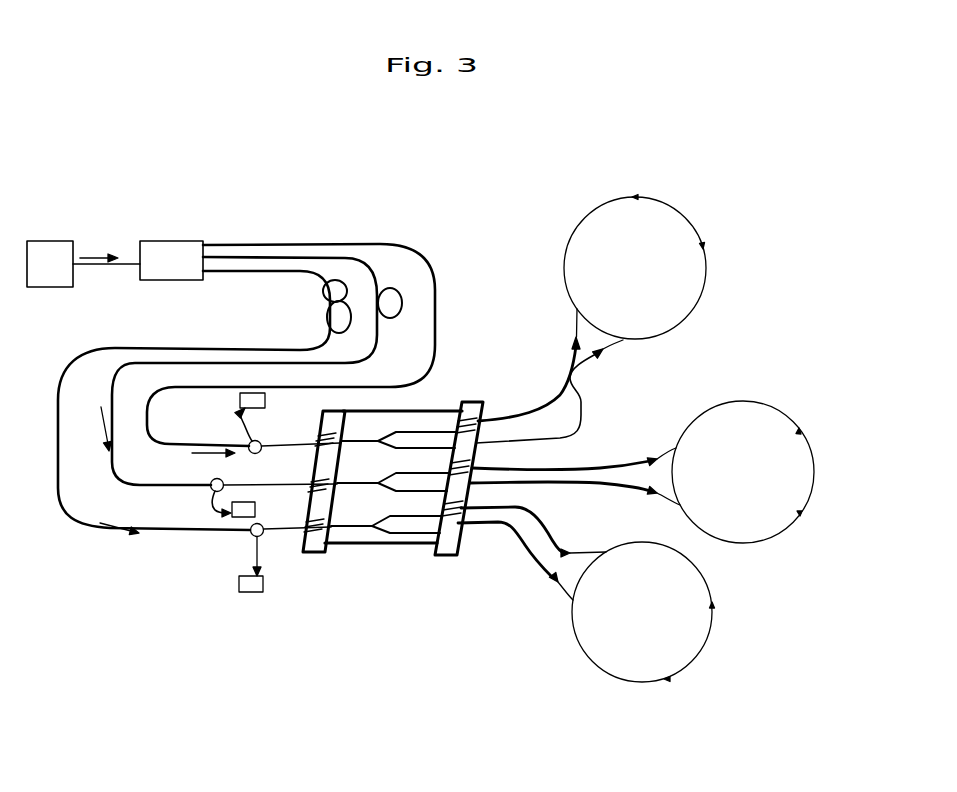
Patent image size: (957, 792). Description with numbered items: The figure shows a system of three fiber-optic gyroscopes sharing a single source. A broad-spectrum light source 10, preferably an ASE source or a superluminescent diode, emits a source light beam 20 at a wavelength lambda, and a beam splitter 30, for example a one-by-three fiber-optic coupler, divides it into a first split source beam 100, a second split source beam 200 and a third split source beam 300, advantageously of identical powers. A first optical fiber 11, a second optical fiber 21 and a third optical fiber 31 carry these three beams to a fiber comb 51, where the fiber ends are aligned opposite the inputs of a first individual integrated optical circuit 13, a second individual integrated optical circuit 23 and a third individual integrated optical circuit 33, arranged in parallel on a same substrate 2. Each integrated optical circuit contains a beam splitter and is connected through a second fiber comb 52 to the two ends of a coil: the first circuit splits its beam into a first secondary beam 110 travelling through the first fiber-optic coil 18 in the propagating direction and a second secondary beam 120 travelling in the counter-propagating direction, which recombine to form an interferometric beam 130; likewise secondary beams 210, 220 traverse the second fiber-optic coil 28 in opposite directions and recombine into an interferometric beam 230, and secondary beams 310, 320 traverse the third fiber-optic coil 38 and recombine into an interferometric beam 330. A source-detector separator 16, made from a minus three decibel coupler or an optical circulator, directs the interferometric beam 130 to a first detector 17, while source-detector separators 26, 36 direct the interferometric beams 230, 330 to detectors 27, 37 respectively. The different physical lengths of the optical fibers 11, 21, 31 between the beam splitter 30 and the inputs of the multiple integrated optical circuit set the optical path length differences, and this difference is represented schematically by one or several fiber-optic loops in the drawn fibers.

The substrate 2 is at (393, 506).
The broad-spectrum light source 10 is at (42, 287).
The first optical fiber 11 is at (262, 246).
The first individual integrated optical circuit 13 is at (392, 431).
The source-detector separator 16 is at (262, 440).
The first detector 17 is at (266, 397).
The first fiber-optic coil 18 is at (707, 255).
The source light beam 20 is at (99, 244).
The second optical fiber 21 is at (348, 262).
The second individual integrated optical circuit 23 is at (370, 485).
The source-detector separator 26 is at (222, 480).
The detector 27 is at (257, 516).
The second fiber-optic coil 28 is at (743, 400).
The beam splitter 30 is at (142, 281).
The third optical fiber 31 is at (282, 348).
The third individual integrated optical circuit 33 is at (370, 525).
The source-detector separator 36 is at (253, 533).
The detector 37 is at (250, 593).
The third fiber-optic coil 38 is at (590, 663).
The fiber comb 51 is at (309, 553).
The second fiber comb 52 is at (448, 558).
The first split source beam 100 is at (194, 453).
The first secondary beam 110 is at (529, 365).
The second secondary beam 120 is at (555, 391).
The interferometric beam 130 is at (226, 424).
The second split source beam 200 is at (96, 443).
The first secondary beam 210 is at (574, 452).
The second secondary beam 220 is at (575, 500).
The interferometric beam 230 is at (196, 504).
The third split source beam 300 is at (108, 536).
The first secondary beam 310 is at (536, 532).
The second secondary beam 320 is at (515, 563).
The interferometric beam 330 is at (239, 556).